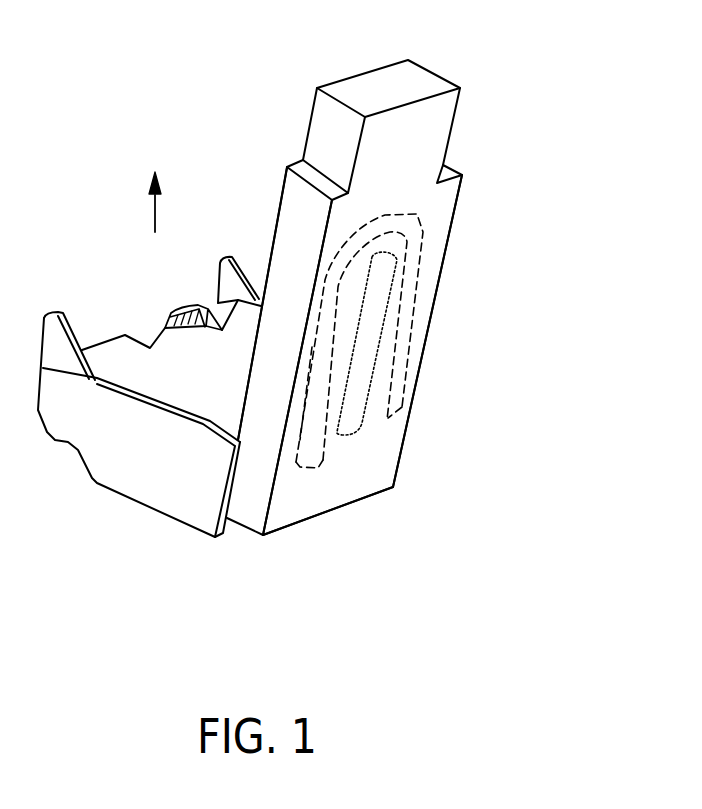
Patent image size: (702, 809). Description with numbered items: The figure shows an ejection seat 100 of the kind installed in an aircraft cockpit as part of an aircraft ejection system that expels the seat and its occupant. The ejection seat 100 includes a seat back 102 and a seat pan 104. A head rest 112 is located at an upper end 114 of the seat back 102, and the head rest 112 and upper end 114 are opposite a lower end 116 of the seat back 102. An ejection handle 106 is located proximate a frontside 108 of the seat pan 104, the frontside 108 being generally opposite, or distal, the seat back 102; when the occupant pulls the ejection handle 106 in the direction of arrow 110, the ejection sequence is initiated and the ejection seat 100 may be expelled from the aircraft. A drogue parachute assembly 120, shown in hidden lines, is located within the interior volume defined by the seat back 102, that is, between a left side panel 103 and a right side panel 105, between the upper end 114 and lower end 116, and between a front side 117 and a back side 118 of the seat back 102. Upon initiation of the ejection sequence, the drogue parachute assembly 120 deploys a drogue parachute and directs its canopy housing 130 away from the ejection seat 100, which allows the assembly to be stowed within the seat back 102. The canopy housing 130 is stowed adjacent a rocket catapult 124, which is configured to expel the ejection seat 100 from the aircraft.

The ejection seat 100 is at (508, 78).
The seat back 102 is at (441, 273).
The left side panel 103 is at (281, 227).
The seat pan 104 is at (222, 377).
The right side panel 105 is at (455, 212).
The ejection handle 106 is at (170, 322).
The frontside 108 is at (110, 343).
The arrow 110 is at (155, 213).
The head rest 112 is at (327, 133).
The upper end 114 is at (446, 166).
The lower end 116 is at (302, 521).
The front side 117 is at (279, 206).
The back side 118 is at (407, 362).
The drogue parachute assembly 120 is at (333, 477).
The rocket catapult 124 is at (363, 425).
The canopy housing 130 is at (320, 424).